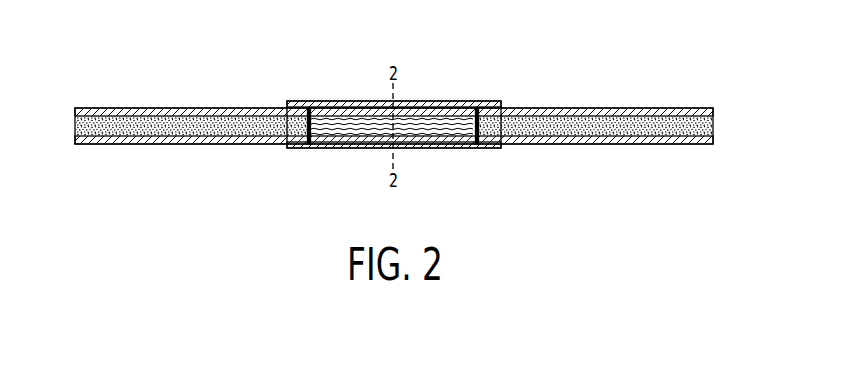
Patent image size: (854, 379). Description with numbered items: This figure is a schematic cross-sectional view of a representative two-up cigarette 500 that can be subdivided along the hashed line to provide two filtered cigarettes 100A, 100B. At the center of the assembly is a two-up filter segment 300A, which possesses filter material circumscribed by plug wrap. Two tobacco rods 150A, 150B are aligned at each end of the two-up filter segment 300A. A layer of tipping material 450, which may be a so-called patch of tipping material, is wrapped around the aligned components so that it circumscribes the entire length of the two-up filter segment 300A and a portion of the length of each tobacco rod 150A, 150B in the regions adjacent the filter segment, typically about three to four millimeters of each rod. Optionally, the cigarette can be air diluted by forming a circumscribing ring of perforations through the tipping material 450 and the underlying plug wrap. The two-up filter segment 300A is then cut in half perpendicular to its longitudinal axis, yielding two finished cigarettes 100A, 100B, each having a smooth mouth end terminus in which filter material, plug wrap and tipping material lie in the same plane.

The filtered cigarette 100A is at (192, 114).
The filtered cigarette 100B is at (595, 113).
The tobacco rod 150A is at (200, 144).
The tobacco rod 150B is at (600, 145).
The two-up filter segment 300A is at (379, 160).
The layer of tipping material 450 is at (442, 150).
The two-up cigarette 500 is at (394, 123).